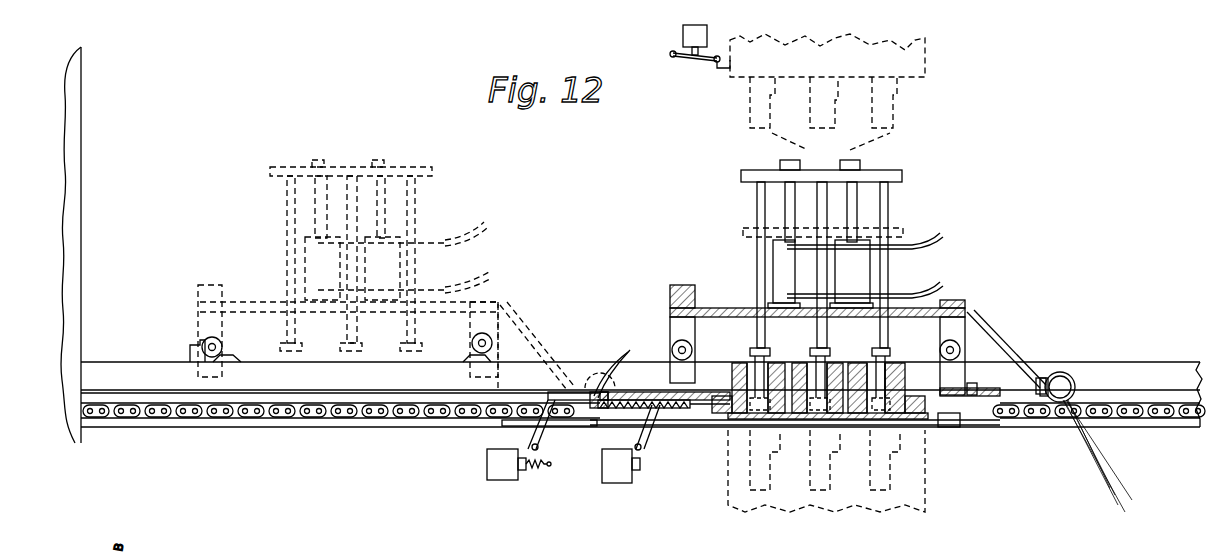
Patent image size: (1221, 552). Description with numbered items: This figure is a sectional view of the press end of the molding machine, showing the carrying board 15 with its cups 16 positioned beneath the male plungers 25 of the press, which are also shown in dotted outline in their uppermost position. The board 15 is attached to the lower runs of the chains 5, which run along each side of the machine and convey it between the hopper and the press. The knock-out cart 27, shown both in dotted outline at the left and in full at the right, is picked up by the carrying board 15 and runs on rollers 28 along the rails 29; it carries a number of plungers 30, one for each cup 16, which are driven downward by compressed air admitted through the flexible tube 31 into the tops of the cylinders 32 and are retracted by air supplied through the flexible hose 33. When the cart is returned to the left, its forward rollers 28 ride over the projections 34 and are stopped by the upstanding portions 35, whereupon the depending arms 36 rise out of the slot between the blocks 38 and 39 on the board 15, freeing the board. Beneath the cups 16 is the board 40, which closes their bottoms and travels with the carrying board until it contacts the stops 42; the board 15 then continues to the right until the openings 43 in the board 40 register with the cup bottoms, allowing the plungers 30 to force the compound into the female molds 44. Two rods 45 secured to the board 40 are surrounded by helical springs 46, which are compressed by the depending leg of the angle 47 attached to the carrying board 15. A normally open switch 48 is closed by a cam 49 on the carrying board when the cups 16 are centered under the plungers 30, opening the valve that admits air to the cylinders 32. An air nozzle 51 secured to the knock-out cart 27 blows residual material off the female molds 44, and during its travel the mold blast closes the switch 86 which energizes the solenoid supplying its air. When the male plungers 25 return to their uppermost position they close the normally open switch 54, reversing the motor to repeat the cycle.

The chains 5 is at (372, 421).
The carrying board 15 is at (730, 395).
The cups 16 is at (760, 376).
The male plungers 25 is at (827, 97).
The knock-out cart 27 is at (430, 210).
The rollers 28 is at (222, 350).
The rails 29 is at (588, 372).
The plungers 30 is at (893, 201).
The flexible tube 31 is at (460, 238).
The cylinders 32 is at (305, 249).
The flexible hose 33 is at (485, 283).
The projections 34 is at (228, 362).
The projections 35 is at (190, 350).
The depending arms 36 is at (528, 326).
The block 38 is at (977, 386).
The block 39 is at (952, 390).
The board 40 is at (738, 424).
The stops 42 is at (950, 427).
The openings 43 is at (762, 420).
The female molds 44 is at (762, 474).
The rods 45 is at (505, 424).
The helical springs 46 is at (615, 410).
The angle 47 is at (612, 369).
The switch 48 is at (505, 478).
The cam 49 is at (556, 395).
The air nozzle 51 is at (603, 372).
The switch 54 is at (707, 32).
The switch 86 is at (615, 484).